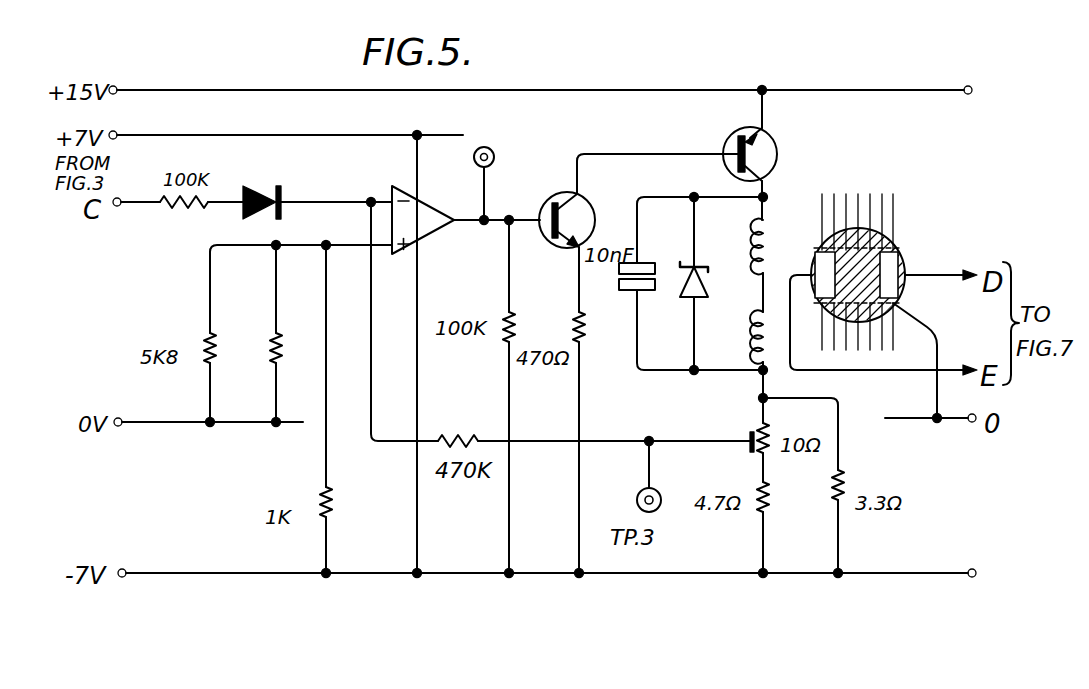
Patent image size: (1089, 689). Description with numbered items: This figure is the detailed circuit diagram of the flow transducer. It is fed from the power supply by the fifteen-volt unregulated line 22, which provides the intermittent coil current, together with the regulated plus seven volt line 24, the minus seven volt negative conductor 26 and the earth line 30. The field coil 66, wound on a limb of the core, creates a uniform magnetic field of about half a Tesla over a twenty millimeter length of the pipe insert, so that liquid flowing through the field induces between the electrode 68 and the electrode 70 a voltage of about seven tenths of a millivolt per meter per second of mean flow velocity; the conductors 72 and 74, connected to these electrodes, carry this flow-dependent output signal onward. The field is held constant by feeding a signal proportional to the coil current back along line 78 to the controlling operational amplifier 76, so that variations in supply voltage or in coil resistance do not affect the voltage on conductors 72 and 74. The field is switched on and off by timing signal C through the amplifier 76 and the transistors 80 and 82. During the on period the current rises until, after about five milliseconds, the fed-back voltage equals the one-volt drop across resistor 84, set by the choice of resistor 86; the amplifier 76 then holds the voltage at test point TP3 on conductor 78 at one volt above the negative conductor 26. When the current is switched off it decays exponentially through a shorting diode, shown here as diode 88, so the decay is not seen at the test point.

The line 22 is at (172, 92).
The regulated supply line 24 is at (256, 117).
The negative conductor 26 is at (215, 556).
The earth line 30 is at (145, 426).
The field coil 66 is at (781, 223).
The electrode 68 is at (900, 262).
The electrode 70 is at (810, 266).
The conductor 72 is at (943, 271).
The conductor 74 is at (946, 367).
The operational amplifier 76 is at (428, 226).
The line 78 is at (532, 440).
The transistor 80 is at (545, 204).
The transistor 82 is at (777, 148).
The resistor 84 is at (324, 496).
The resistor 86 is at (278, 346).
The zener diode 88 is at (707, 296).